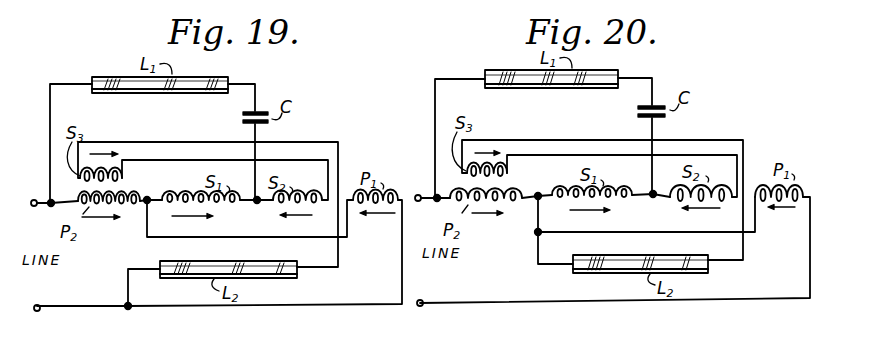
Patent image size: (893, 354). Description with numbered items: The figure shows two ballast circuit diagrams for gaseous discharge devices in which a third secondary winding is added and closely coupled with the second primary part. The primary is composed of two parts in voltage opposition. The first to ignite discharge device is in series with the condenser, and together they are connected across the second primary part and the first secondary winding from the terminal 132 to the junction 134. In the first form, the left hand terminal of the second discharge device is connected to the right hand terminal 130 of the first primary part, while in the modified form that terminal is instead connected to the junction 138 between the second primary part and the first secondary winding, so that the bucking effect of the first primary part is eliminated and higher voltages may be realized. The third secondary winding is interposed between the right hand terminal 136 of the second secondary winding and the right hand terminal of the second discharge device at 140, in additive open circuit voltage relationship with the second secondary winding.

In FIG. 19, the right hand terminal of primary part P1 130 is at (402, 241).
In FIG. 20, the right hand terminal of primary part P1 130 is at (808, 267).
In FIG. 19, the terminal 132 is at (50, 198).
In FIG. 20, the terminal 132 is at (434, 191).
In FIG. 19, the junction 134 is at (258, 204).
In FIG. 20, the junction 134 is at (642, 229).
In FIG. 19, the right hand terminal of second secondary winding S2 136 is at (227, 180).
In FIG. 20, the right hand terminal of second secondary winding S2 136 is at (738, 168).
In FIG. 19, the junction between windings P2 and S1 138 is at (148, 198).
In FIG. 20, the junction between windings P2 and S1 138 is at (543, 184).
In FIG. 19, the right hand terminal of gaseous discharge device L2 140 is at (338, 256).
In FIG. 20, the right hand terminal of gaseous discharge device L2 140 is at (765, 128).